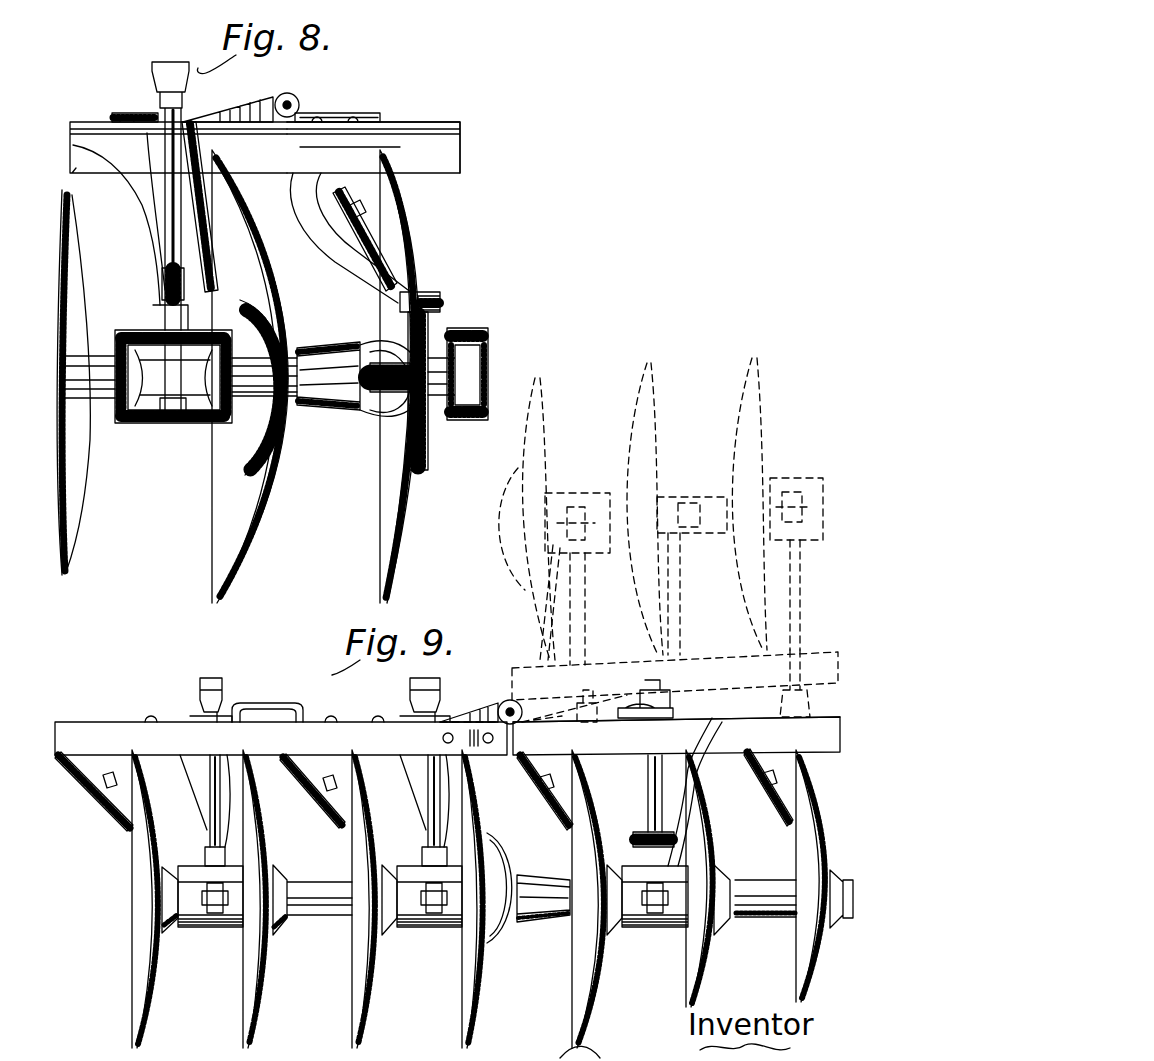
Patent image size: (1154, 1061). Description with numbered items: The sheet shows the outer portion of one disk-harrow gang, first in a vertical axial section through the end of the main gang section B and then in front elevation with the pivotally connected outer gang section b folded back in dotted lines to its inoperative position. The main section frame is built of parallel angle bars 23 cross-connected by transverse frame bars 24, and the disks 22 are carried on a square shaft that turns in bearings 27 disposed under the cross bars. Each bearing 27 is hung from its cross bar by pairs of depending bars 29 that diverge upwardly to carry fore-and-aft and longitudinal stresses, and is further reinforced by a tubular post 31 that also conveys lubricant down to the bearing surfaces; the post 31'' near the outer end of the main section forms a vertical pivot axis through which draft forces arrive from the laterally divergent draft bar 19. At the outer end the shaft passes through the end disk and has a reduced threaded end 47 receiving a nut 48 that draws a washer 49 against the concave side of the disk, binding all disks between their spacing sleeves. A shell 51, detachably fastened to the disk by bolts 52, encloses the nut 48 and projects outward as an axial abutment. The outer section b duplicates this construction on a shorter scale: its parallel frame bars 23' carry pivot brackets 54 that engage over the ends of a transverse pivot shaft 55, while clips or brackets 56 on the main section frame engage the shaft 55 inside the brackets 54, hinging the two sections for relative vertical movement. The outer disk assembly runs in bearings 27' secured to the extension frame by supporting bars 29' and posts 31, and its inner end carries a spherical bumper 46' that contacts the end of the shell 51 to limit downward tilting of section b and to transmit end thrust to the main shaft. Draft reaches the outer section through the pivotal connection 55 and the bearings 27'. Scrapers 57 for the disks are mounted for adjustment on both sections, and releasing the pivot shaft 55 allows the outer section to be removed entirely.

In FIG. 9, the laterally divergent draft bar 19 is at (633, 838).
In FIG. 8, the disk 22 is at (410, 514).
In FIG. 9, the disk 22 is at (800, 836).
In FIG. 8, the angle bar 23 is at (396, 153).
In FIG. 9, the angle bar 23 is at (676, 768).
In FIG. 8, the parallel frame bar 23' is at (178, 166).
In FIG. 9, the parallel frame bar 23' is at (446, 671).
In FIG. 9, the transverse frame bar 24 is at (652, 723).
In FIG. 8, the bearing 27 is at (467, 396).
In FIG. 9, the bearing 27 is at (646, 922).
In FIG. 8, the bearing 27' is at (173, 389).
In FIG. 9, the bearing 27' is at (319, 917).
In FIG. 9, the depending bar 29 is at (697, 780).
In FIG. 8, the supporting bar 29' is at (153, 196).
In FIG. 9, the supporting bar 29' is at (310, 801).
In FIG. 8, the post 31 is at (149, 284).
In FIG. 9, the post 31 is at (305, 841).
In FIG. 9, the post 31'' is at (634, 793).
In FIG. 8, the spherical bumper 46' is at (258, 376).
In FIG. 9, the spherical bumper 46' is at (510, 913).
In FIG. 8, the reduced threaded end 47 is at (372, 398).
In FIG. 8, the nut 48 is at (385, 405).
In FIG. 8, the washer 49 is at (412, 398).
In FIG. 8, the shell 51 is at (332, 410).
In FIG. 9, the shell 51 is at (545, 915).
In FIG. 8, the bolt 52 is at (441, 301).
In FIG. 8, the pivot bracket 54 is at (248, 101).
In FIG. 9, the pivot bracket 54 is at (490, 712).
In FIG. 8, the pivot shaft 55 is at (297, 101).
In FIG. 9, the pivot shaft 55 is at (505, 703).
In FIG. 8, the clip or bracket 56 is at (308, 119).
In FIG. 9, the clip or bracket 56 is at (520, 722).
In FIG. 8, the scraper 57 is at (152, 193).
In FIG. 9, the scraper 57 is at (308, 840).
In FIG. 8, the main gang section B is at (445, 119).
In FIG. 9, the main gang section B is at (692, 714).
In FIG. 8, the outer gang section b is at (82, 114).
In FIG. 9, the outer gang section b is at (293, 682).